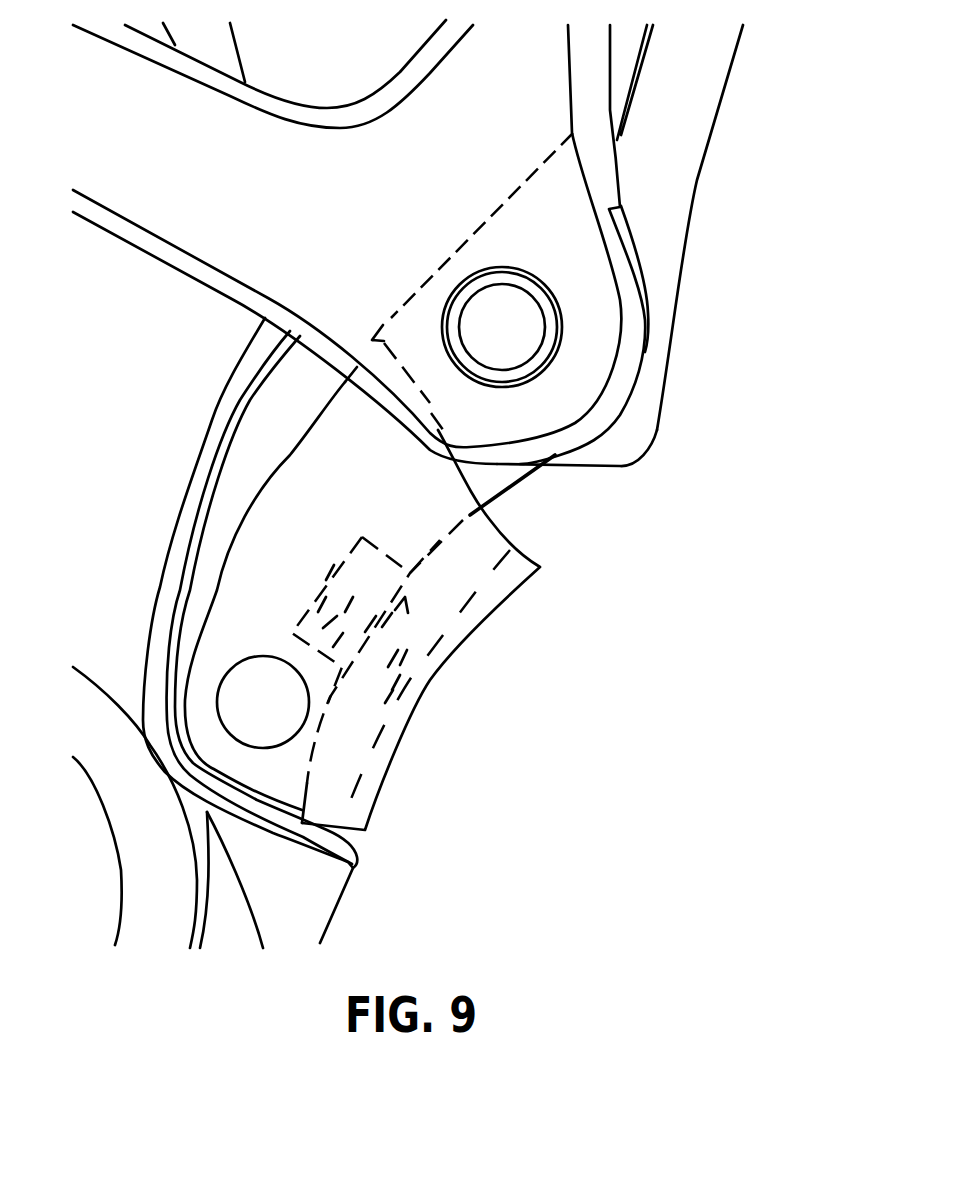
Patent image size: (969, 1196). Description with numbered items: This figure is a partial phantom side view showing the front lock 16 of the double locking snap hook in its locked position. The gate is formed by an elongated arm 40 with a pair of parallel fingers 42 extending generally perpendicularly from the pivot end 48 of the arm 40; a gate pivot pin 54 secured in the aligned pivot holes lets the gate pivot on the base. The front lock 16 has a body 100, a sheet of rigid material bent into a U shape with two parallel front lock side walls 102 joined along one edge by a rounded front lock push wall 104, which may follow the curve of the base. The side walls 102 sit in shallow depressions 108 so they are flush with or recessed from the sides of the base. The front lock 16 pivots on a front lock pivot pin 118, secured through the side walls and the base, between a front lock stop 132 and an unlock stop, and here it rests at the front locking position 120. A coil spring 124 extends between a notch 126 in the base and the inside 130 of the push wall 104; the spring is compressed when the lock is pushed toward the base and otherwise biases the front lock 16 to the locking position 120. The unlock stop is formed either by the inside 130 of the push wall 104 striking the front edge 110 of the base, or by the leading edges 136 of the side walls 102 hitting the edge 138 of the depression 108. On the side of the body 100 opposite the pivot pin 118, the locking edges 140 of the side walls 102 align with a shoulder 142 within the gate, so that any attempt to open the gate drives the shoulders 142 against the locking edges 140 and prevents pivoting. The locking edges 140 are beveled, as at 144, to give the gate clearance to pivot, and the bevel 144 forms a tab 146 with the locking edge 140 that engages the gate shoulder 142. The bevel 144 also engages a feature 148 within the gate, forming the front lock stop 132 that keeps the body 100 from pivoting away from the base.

The front lock 16 is at (586, 703).
The elongated arm 40 is at (703, 162).
The fingers 42 is at (277, 92).
The pivot end 48 is at (640, 455).
The gate pivot pin 54 is at (507, 313).
The front lock body 100 is at (391, 778).
The front lock side walls 102 is at (260, 565).
The front lock push wall 104 is at (472, 637).
The depressions 108 is at (277, 403).
The front edge of the base 110 is at (457, 532).
The front lock pivot pin 118 is at (260, 677).
The front locking position 120 is at (409, 333).
The coil spring 124 is at (381, 565).
The notch 126 is at (338, 552).
The inside of the front lock push wall 130 is at (370, 748).
The front lock stop 132 is at (484, 478).
The leading edges 136 is at (267, 480).
The edge of the depression 138 is at (242, 425).
The locking edges 140 is at (386, 368).
The shoulder 142 is at (391, 325).
The bevel 144 is at (441, 442).
The tab 146 is at (378, 360).
The feature 148 is at (440, 448).